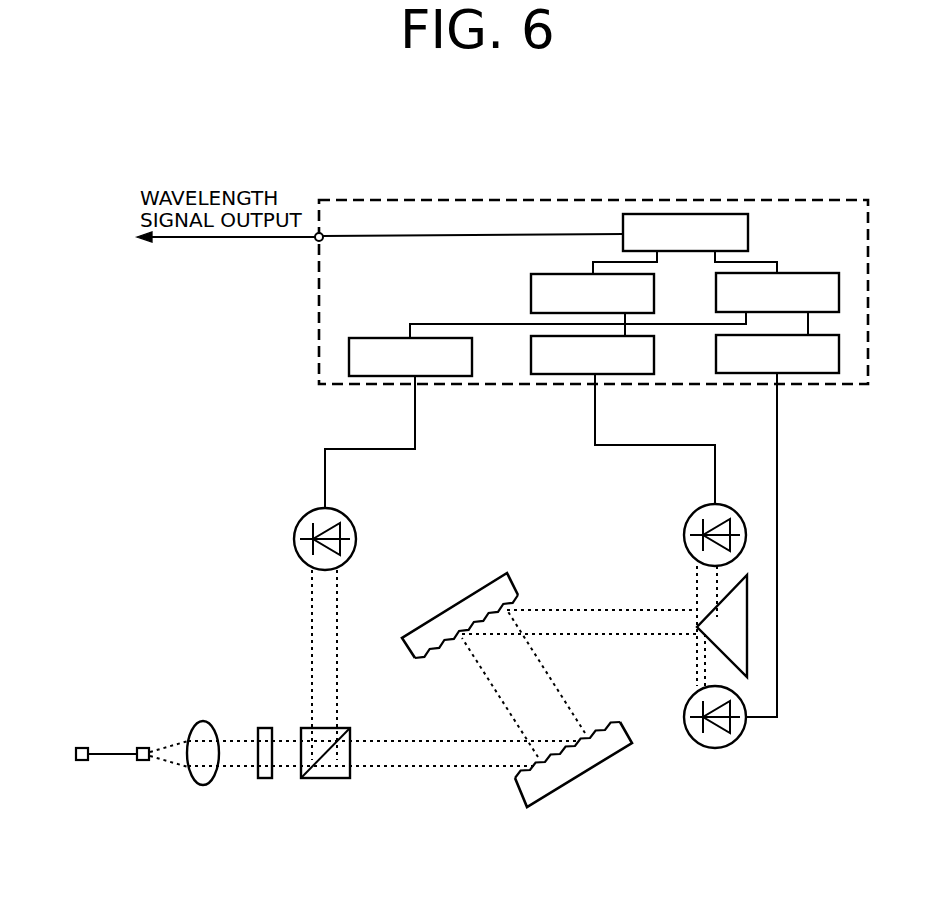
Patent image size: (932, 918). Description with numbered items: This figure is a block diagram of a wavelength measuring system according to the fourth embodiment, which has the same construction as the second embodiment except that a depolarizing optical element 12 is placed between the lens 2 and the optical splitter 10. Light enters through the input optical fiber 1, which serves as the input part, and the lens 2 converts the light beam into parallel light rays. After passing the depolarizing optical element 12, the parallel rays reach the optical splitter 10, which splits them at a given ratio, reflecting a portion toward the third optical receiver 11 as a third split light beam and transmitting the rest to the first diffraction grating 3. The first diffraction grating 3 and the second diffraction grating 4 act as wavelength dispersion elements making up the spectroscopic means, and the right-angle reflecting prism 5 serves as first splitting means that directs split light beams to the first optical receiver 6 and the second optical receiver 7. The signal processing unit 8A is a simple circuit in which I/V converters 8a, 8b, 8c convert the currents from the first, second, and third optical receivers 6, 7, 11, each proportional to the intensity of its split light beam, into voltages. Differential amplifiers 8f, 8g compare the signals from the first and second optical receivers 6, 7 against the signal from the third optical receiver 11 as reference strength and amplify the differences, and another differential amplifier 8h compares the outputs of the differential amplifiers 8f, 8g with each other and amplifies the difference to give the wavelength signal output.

The input optical fiber 1 is at (110, 756).
The lens 2 is at (200, 735).
The first diffraction grating 3 is at (570, 787).
The second diffraction grating 4 is at (433, 622).
The right-angle reflecting prism 5 is at (738, 624).
The first optical receiver 6 is at (746, 535).
The second optical receiver 7 is at (740, 738).
The signal processing unit 8A is at (822, 200).
The I/V converter 8a is at (546, 378).
The I/V converter 8b is at (800, 378).
The I/V converter 8c is at (362, 378).
The differential amplifier 8f is at (655, 291).
The differential amplifier 8g is at (840, 291).
The differential amplifier 8h is at (688, 212).
The optical splitter 10 is at (315, 780).
The third optical receiver 11 is at (294, 536).
The depolarizing optical element 12 is at (258, 775).